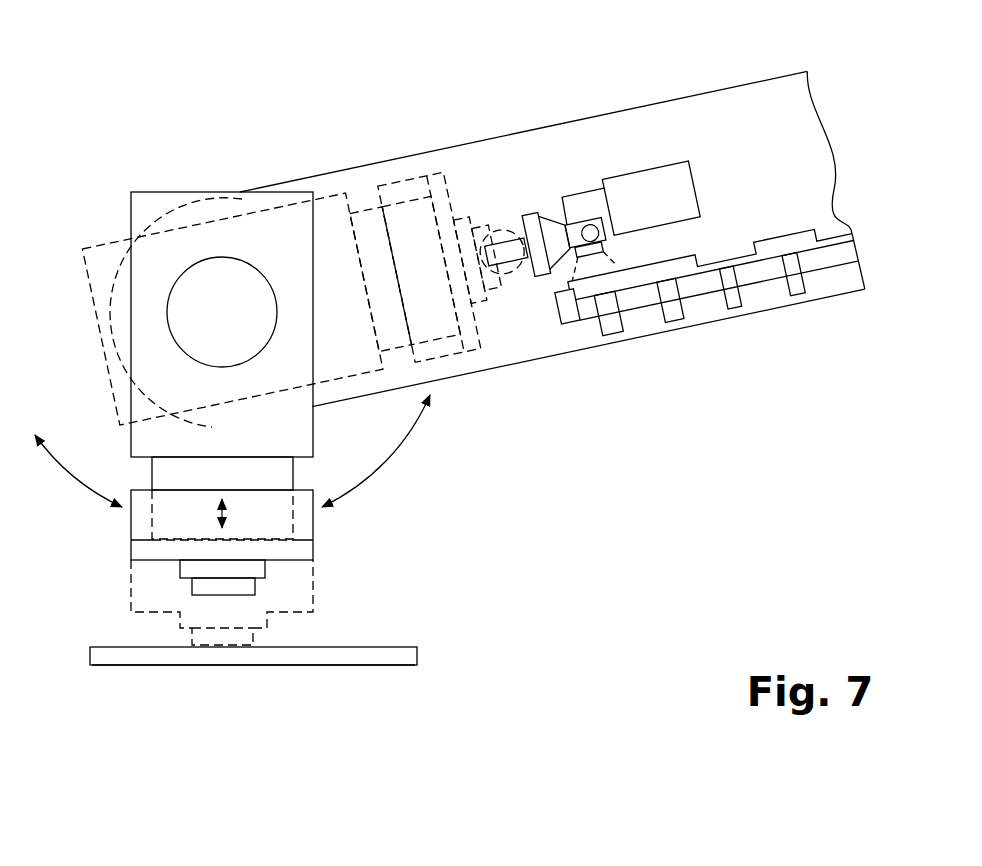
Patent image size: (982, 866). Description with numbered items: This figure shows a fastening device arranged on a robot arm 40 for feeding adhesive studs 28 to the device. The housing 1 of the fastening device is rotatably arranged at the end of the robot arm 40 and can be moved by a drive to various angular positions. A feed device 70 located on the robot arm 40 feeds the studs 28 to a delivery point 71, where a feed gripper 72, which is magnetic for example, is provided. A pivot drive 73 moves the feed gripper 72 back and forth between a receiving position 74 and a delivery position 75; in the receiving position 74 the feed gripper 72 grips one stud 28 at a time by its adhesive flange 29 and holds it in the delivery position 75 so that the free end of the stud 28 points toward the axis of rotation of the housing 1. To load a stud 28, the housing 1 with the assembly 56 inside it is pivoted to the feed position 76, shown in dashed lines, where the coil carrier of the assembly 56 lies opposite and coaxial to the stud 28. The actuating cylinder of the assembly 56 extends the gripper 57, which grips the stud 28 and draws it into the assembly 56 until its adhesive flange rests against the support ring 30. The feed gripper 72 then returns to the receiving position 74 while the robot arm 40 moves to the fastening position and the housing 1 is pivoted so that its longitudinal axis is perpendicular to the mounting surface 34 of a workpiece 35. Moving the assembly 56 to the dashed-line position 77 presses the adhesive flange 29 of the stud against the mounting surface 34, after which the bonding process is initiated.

The housing 1 is at (151, 192).
The stud 28 is at (511, 232).
The adhesive flange 29 is at (248, 587).
The support ring 30 is at (265, 568).
The mounting surface 34 is at (397, 643).
The workpiece 35 is at (380, 658).
The robot arm 40 is at (720, 104).
The assembly 56 is at (310, 528).
The gripper 57 is at (488, 215).
The feed device 70 is at (823, 258).
The delivery point 71 is at (550, 208).
The feed gripper 72 is at (590, 224).
The pivot drive 73 is at (614, 183).
The receiving position 74 is at (629, 258).
The delivery position 75 is at (525, 206).
The feed position 76 is at (401, 168).
The position 77 is at (120, 597).